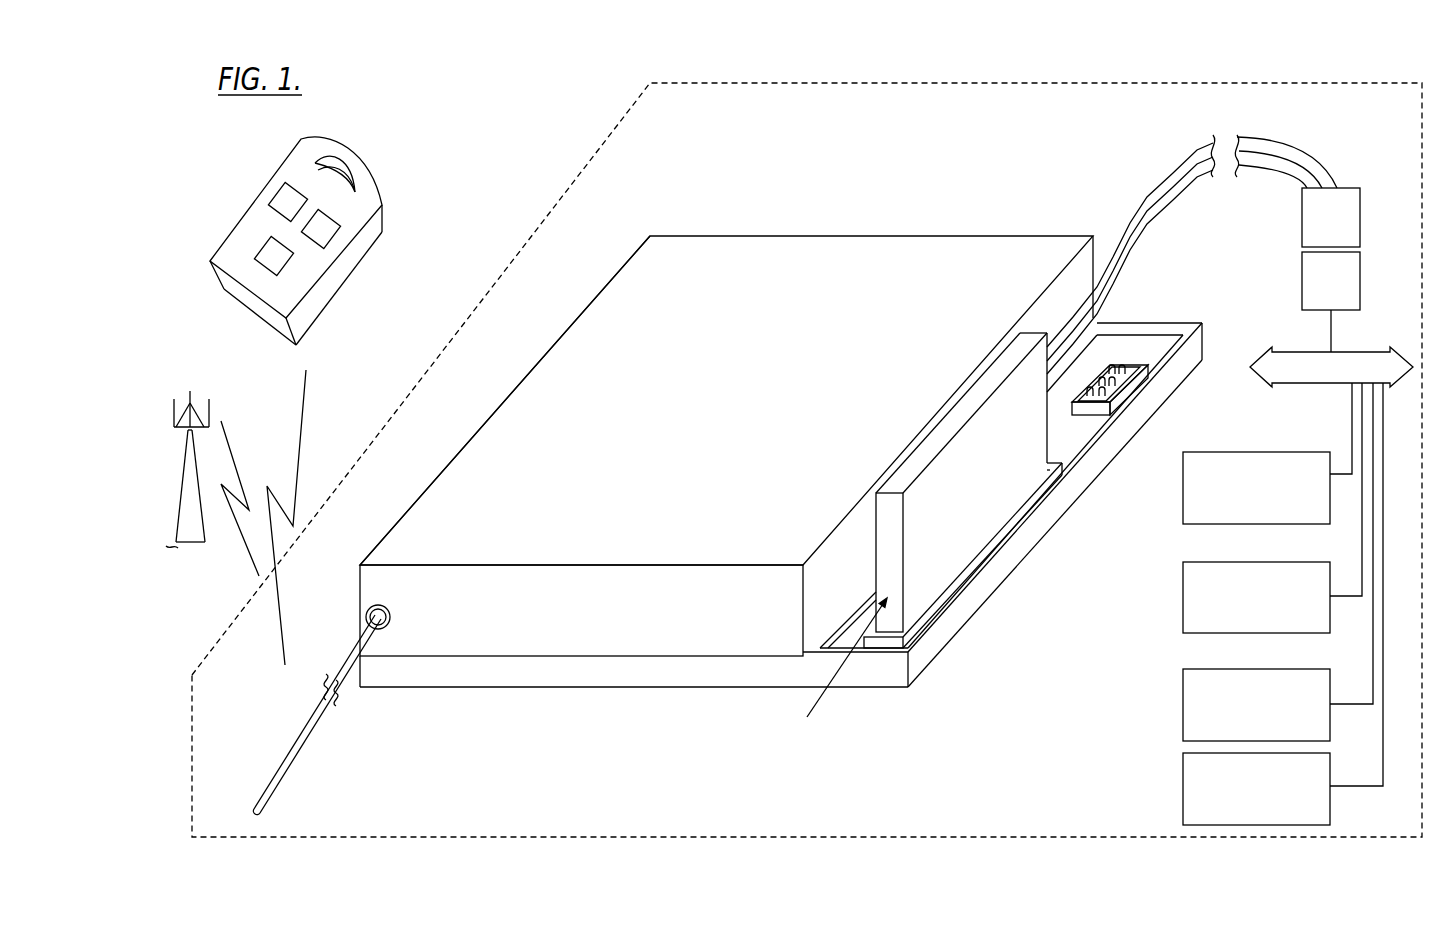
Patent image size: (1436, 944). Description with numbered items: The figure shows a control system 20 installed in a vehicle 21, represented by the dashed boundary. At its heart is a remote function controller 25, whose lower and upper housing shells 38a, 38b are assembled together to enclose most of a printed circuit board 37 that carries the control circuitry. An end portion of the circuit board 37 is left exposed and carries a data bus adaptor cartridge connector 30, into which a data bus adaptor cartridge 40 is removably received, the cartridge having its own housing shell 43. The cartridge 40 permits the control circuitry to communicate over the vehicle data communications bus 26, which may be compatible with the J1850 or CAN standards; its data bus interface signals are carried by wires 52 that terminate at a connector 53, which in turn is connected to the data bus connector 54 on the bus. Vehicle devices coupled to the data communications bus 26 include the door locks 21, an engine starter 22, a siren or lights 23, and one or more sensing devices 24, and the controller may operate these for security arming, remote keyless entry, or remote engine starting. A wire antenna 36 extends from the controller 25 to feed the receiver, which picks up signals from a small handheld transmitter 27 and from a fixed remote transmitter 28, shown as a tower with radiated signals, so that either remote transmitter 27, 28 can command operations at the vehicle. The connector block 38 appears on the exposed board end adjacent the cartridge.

The control system 20 is at (511, 87).
The vehicle 21 is at (1183, 514).
The engine starter 22 is at (1183, 624).
The siren or lights 23 is at (1183, 694).
The sensing devices 24 is at (1183, 772).
The remote function controller 25 is at (966, 229).
The data communications bus 26 is at (1386, 348).
The handheld transmitter 27 is at (250, 205).
The fixed remote transmitter 28 is at (178, 491).
The data bus adaptor cartridge connector 30 is at (888, 642).
The antenna 36 is at (298, 760).
The printed circuit board 37 is at (1070, 445).
The connector block 38 is at (1122, 363).
The lower housing shell 38a is at (553, 690).
The upper housing shell 38b is at (527, 395).
The data bus adaptor cartridge 40 is at (840, 673).
The housing shell 43 is at (1015, 380).
The wires 52 is at (1302, 172).
The connector 53 is at (1342, 232).
The data bus connector 54 is at (1342, 296).